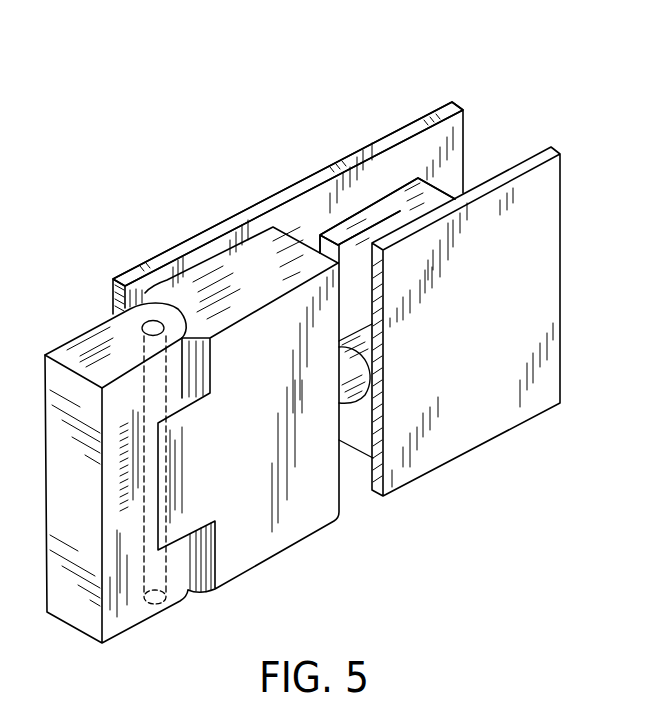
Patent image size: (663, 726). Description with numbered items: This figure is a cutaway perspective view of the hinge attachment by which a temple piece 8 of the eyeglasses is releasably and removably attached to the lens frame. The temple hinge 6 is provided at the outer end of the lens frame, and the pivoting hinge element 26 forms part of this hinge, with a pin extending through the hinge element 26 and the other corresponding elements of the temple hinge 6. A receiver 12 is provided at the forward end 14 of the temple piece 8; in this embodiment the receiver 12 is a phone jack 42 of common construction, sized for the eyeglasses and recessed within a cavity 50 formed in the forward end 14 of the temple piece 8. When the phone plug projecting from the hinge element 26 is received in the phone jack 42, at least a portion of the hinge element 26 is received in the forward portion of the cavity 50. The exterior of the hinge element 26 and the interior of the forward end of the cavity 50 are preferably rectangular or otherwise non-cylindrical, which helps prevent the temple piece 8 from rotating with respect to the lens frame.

The temple hinge 6 is at (66, 352).
The forward end 14 is at (138, 276).
The hinge element 26 is at (183, 293).
The receiver 12 is at (342, 232).
The phone jack 42 is at (342, 232).
The temple piece 8 is at (372, 152).
The cavity 50 is at (194, 604).